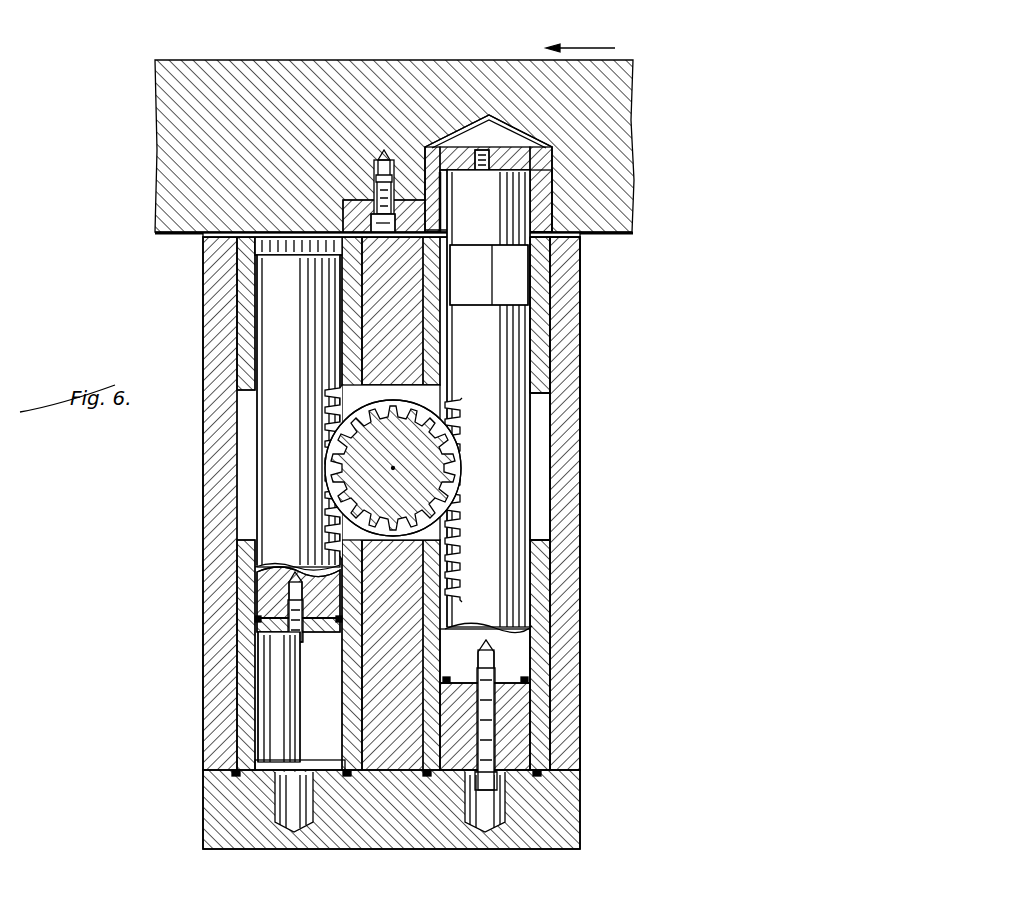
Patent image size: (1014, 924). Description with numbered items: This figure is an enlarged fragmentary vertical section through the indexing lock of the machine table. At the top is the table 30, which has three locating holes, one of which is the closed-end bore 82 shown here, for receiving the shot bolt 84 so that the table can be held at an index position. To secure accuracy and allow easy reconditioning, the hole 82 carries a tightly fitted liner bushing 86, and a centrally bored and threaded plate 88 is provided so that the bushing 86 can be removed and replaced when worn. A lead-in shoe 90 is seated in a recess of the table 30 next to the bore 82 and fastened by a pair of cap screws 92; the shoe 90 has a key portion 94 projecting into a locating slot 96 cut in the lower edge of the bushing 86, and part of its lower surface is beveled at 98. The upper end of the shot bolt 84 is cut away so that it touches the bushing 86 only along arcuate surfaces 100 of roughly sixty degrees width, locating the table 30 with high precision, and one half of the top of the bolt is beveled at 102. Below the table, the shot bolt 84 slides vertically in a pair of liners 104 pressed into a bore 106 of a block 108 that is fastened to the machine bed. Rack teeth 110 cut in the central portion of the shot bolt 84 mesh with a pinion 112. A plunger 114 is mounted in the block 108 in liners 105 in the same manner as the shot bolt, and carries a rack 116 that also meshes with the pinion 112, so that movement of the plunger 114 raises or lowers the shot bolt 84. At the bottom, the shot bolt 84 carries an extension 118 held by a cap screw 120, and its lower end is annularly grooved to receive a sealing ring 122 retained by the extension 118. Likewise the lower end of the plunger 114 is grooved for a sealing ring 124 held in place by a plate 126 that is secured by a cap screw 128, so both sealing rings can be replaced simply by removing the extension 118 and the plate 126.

The table 30 is at (612, 148).
The locating hole 82 is at (565, 228).
The shot bolt 84 is at (505, 345).
The liner bushing 86 is at (548, 195).
The plate 88 is at (448, 157).
The lead-in shoe 90 is at (400, 208).
The cap screw 92 is at (386, 152).
The key portion 94 is at (445, 213).
The locating slot 96 is at (445, 230).
The beveled surface 98 is at (390, 232).
The arcuate surface 100 is at (540, 283).
The beveled top 102 is at (530, 283).
The liner 104 is at (542, 377).
The liners 105 is at (237, 322).
The bore 106 is at (543, 428).
The block 108 is at (563, 473).
The rack teeth 110 is at (458, 422).
The pinion 112 is at (465, 488).
The plunger 114 is at (280, 468).
The rack 116 is at (323, 412).
The extension 118 is at (510, 720).
The cap screw 120 is at (480, 767).
The sealing ring 122 is at (570, 641).
The sealing ring 124 is at (255, 612).
The plate 126 is at (300, 630).
The cap screw 128 is at (290, 650).